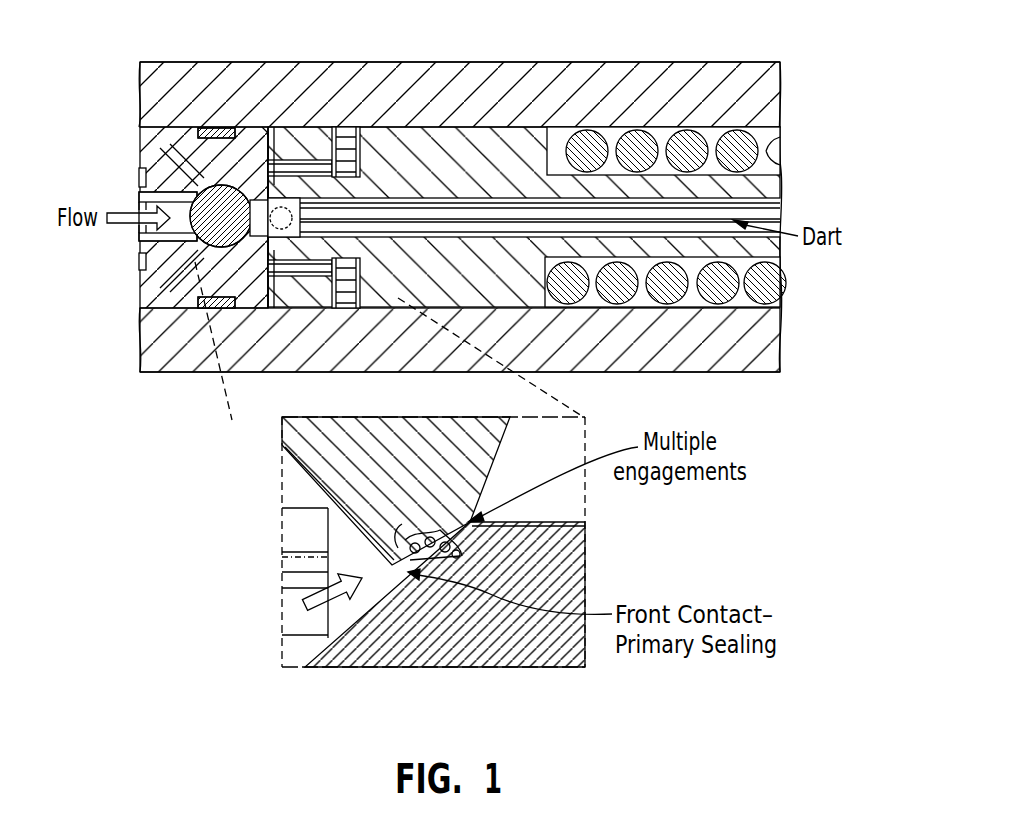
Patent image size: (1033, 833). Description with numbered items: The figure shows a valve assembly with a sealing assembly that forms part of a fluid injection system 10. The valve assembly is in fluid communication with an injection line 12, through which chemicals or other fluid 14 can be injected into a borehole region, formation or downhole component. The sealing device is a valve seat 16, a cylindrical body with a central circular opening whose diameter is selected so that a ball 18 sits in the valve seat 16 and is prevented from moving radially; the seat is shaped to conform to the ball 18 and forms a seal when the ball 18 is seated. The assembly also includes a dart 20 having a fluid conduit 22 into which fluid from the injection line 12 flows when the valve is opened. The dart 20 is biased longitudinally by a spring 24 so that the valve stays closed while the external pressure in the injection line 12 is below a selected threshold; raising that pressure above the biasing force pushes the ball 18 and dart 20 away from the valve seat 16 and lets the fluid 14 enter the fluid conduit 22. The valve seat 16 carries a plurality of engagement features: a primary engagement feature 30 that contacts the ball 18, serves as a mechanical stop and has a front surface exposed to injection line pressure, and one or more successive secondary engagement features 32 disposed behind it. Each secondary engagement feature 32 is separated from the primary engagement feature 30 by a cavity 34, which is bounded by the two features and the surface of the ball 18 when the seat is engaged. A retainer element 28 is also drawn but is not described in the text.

The fluid injection system 10 is at (712, 28).
The injection line 12 is at (139, 237).
The fluid 14 is at (139, 212).
The valve seat 16 is at (139, 340).
The ball 18 is at (139, 283).
The dart 20 is at (453, 140).
The fluid conduit 22 is at (420, 213).
The spring 24 is at (588, 138).
The retainer collar 28 is at (273, 182).
The primary engagement feature 30 is at (396, 562).
The secondary engagement feature 32 is at (463, 557).
The first cavity 34 is at (406, 545).